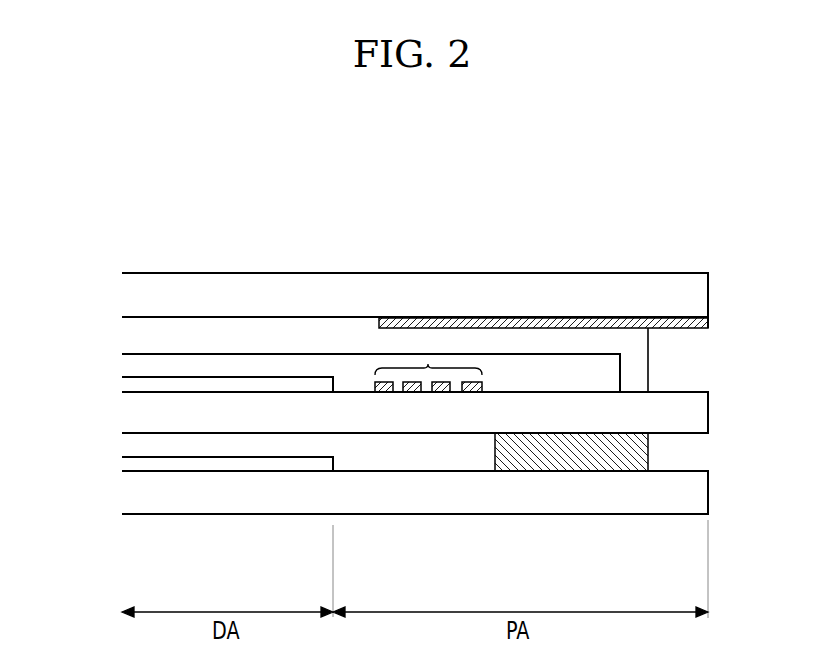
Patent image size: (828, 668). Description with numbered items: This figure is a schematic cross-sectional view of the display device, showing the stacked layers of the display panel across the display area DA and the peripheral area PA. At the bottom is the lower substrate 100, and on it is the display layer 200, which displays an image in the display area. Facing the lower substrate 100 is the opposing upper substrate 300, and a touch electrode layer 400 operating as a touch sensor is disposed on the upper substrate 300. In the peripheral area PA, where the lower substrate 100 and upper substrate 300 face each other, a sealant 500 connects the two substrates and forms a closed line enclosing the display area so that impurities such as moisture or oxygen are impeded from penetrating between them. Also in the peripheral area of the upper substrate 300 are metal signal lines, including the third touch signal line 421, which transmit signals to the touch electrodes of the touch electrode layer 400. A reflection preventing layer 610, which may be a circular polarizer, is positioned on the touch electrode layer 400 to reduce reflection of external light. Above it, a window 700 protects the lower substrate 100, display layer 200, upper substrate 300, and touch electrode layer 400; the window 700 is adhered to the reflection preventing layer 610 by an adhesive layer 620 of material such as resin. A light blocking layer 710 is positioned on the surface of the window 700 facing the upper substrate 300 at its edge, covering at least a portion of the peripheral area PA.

The lower substrate 100 is at (692, 495).
The display layer 200 is at (137, 463).
The upper substrate 300 is at (692, 415).
The touch electrode layer 400 is at (137, 385).
The third touch signal line 421 is at (428, 364).
The sealant 500 is at (565, 455).
The reflection preventing layer 610 is at (138, 367).
The adhesive layer 620 is at (137, 335).
The window 700 is at (693, 293).
The light blocking layer 710 is at (702, 323).